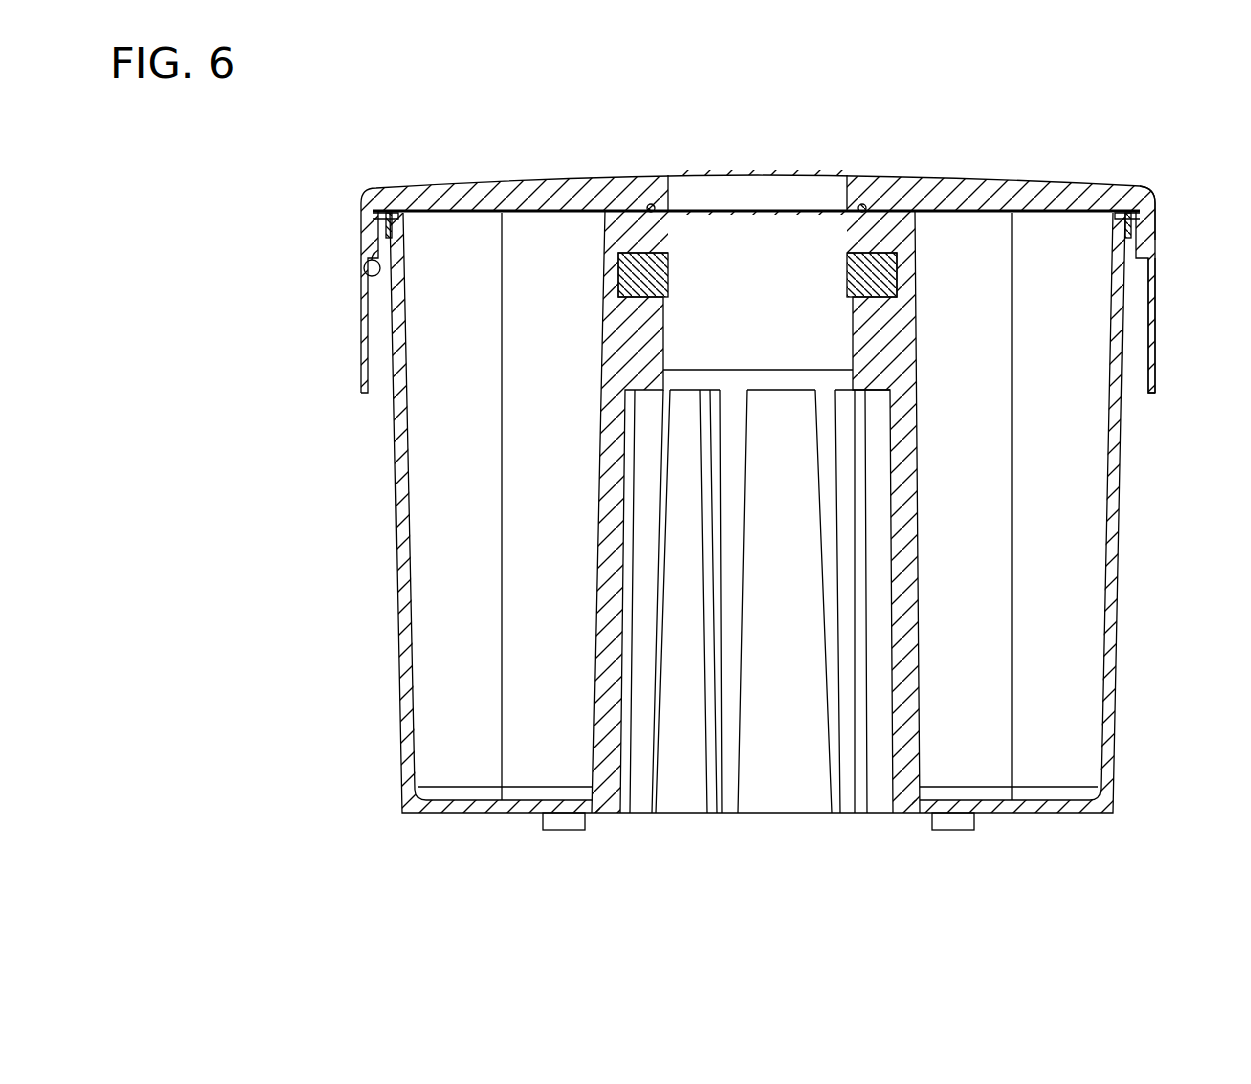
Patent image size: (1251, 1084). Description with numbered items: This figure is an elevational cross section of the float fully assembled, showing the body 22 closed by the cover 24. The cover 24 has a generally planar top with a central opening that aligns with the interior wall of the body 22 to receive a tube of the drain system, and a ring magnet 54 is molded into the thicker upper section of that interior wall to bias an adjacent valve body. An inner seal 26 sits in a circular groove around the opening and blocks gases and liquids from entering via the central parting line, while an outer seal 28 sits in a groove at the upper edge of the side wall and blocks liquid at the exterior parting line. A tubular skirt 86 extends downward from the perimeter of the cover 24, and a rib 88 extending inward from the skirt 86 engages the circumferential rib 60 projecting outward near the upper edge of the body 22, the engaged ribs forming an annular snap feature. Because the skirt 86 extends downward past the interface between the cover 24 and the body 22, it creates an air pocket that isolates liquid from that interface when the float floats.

The body 22 is at (1126, 631).
The cover 24 is at (1055, 184).
The inner seal 26 is at (650, 203).
The outer seal 28 is at (1153, 209).
The ring magnet 54 is at (670, 273).
The circumferential rib 60 is at (1133, 237).
The tubular skirt 86 is at (1158, 364).
The rib 88 is at (366, 278).